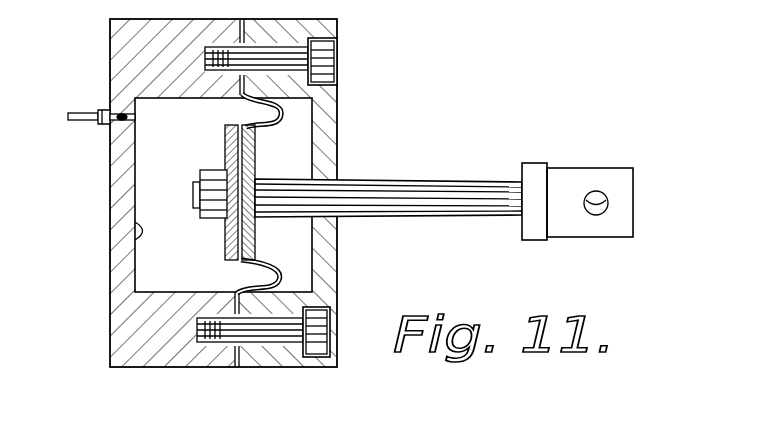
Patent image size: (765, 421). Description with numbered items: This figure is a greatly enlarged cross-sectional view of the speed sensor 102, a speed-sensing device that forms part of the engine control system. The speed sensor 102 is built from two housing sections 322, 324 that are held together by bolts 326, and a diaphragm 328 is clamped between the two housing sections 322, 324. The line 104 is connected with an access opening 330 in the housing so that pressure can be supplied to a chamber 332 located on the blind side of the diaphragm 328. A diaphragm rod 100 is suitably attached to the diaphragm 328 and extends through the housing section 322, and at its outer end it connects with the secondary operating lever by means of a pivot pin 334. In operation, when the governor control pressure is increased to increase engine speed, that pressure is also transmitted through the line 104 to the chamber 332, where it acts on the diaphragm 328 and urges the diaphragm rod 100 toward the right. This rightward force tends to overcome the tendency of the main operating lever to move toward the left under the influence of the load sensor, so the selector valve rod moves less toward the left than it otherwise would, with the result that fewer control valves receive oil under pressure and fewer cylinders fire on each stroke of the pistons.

The diaphragm rod 100 is at (435, 180).
The speed sensor 102 is at (230, 193).
The line 104 is at (93, 123).
The housing section 322 is at (337, 287).
The housing section 324 is at (110, 178).
The bolts 326 is at (338, 60).
The diaphragm 328 is at (236, 124).
The access opening 330 is at (120, 112).
The chamber 332 is at (136, 228).
The pivot pin 334 is at (598, 192).